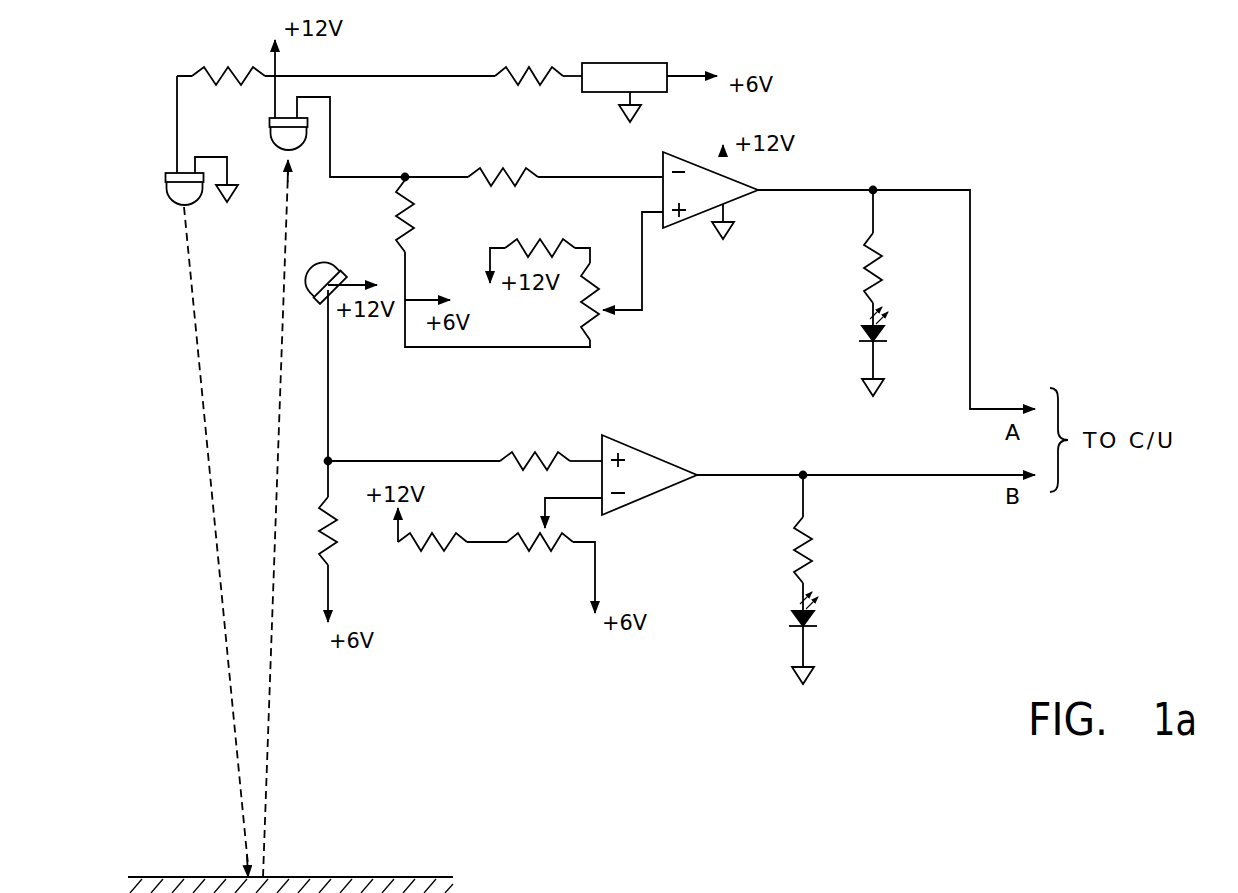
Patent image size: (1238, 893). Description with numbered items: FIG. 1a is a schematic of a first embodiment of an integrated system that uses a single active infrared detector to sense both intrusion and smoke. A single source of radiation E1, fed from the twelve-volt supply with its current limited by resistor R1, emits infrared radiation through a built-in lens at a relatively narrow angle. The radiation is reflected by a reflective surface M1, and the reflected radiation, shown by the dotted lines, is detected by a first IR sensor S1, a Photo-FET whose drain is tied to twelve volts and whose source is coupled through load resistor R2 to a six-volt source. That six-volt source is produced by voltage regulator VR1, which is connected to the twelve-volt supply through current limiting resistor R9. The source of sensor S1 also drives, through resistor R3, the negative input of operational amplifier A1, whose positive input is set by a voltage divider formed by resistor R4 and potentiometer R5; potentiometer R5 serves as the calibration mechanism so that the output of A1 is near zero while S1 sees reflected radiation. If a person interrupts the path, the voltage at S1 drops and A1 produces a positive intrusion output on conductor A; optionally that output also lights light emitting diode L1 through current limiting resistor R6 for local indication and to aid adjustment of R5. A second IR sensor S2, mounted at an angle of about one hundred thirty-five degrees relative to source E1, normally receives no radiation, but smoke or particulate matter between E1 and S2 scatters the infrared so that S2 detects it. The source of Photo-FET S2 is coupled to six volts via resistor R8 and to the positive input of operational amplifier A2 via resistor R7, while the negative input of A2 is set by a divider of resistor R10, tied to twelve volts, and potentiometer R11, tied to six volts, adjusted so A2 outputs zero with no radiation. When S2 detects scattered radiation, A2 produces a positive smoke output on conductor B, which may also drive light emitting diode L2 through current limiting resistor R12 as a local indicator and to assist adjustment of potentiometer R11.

The source of radiation E1 is at (186, 183).
The first IR sensor S1 is at (274, 133).
The second IR sensor S2 is at (321, 267).
The resistor R1 is at (228, 62).
The load resistor R2 is at (422, 216).
The resistor R3 is at (503, 164).
The resistor R4 is at (540, 235).
The potentiometer R5 is at (608, 303).
The current limiting resistor R6 is at (889, 268).
The resistor R7 is at (535, 449).
The resistor R8 is at (344, 533).
The current limiting resistor R9 is at (529, 64).
The resistor R10 is at (432, 556).
The potentiometer R11 is at (540, 556).
The current limiting resistor R12 is at (827, 550).
The voltage regulator VR1 is at (624, 92).
The operational amplifier A1 is at (710, 190).
The operational amplifier A2 is at (649, 475).
The light emitting diode L1 is at (884, 349).
The light emitting diode L2 is at (816, 633).
The reflective surface M1 is at (463, 892).